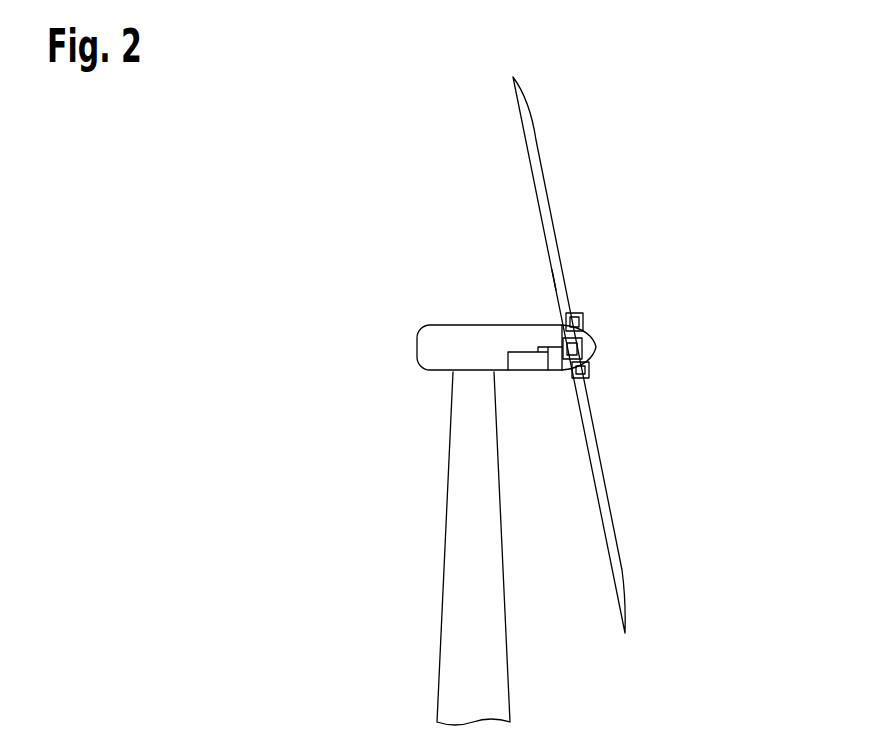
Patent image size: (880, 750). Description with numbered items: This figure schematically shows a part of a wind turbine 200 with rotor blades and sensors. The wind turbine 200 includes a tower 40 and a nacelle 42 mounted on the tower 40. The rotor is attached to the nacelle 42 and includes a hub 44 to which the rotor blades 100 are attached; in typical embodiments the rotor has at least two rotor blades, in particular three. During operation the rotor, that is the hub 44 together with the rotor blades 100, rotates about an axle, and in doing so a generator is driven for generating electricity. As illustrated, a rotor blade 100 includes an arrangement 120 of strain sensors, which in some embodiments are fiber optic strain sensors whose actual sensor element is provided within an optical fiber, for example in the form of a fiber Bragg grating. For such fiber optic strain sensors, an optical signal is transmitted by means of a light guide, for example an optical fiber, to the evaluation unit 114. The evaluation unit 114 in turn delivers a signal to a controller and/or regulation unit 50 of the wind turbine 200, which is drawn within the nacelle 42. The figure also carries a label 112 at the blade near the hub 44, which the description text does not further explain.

The wind turbine 200 is at (222, 177).
The tower 40 is at (458, 575).
The nacelle 42 is at (436, 344).
The hub 44 is at (598, 347).
The controller and/or regulation unit 50 is at (531, 368).
The rotor blade 100 is at (535, 152).
The blade root 112 is at (563, 278).
The evaluation unit 114 is at (590, 355).
The arrangement of strain sensors 120 is at (604, 318).